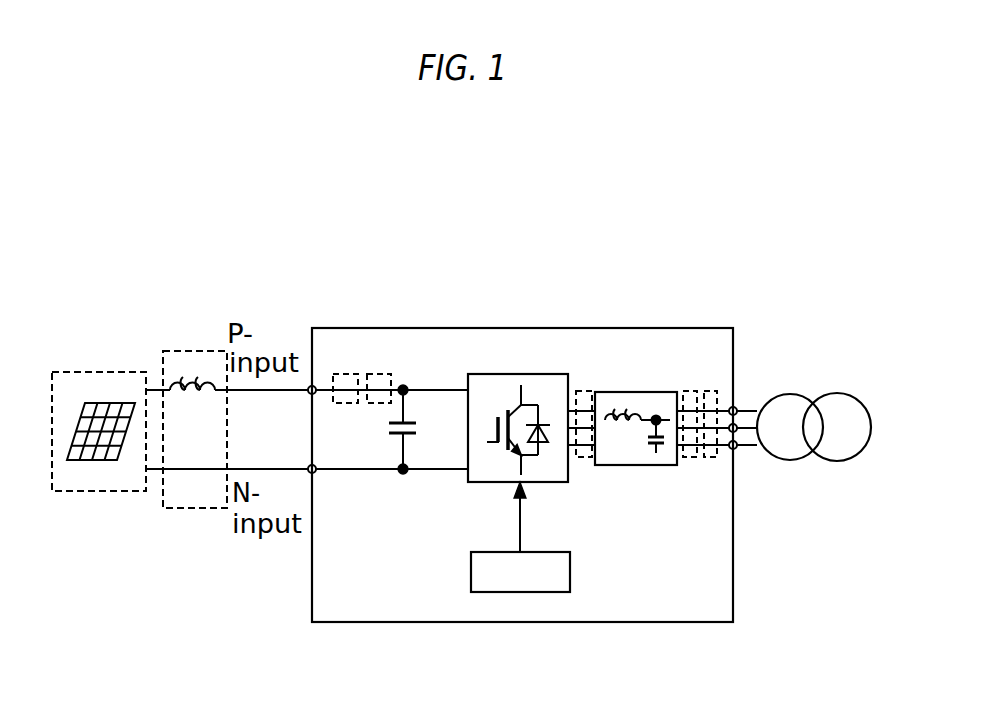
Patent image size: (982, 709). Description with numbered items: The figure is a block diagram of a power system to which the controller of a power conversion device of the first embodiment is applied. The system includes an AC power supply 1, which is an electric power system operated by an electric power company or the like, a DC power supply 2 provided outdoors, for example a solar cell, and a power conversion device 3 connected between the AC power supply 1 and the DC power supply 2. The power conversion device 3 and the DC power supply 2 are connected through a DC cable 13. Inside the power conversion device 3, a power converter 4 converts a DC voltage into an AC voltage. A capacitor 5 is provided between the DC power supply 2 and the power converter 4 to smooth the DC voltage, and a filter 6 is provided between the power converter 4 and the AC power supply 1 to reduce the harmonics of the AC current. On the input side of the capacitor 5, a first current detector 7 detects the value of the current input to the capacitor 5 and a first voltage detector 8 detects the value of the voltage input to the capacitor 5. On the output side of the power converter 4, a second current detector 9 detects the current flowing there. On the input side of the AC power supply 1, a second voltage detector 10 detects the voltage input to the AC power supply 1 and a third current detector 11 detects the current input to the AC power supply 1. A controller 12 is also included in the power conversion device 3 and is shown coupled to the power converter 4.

The AC power supply 1 is at (818, 392).
The DC power supply 2 is at (97, 372).
The power conversion device 3 is at (445, 326).
The power converter 4 is at (521, 374).
The capacitor 5 is at (421, 425).
The filter 6 is at (630, 392).
The first current detector 7 is at (347, 374).
The first voltage detector 8 is at (383, 374).
The second current detector 9 is at (588, 388).
The second voltage detector 10 is at (690, 391).
The third current detector 11 is at (719, 391).
The controller 12 is at (520, 592).
The DC cable 13 is at (175, 351).